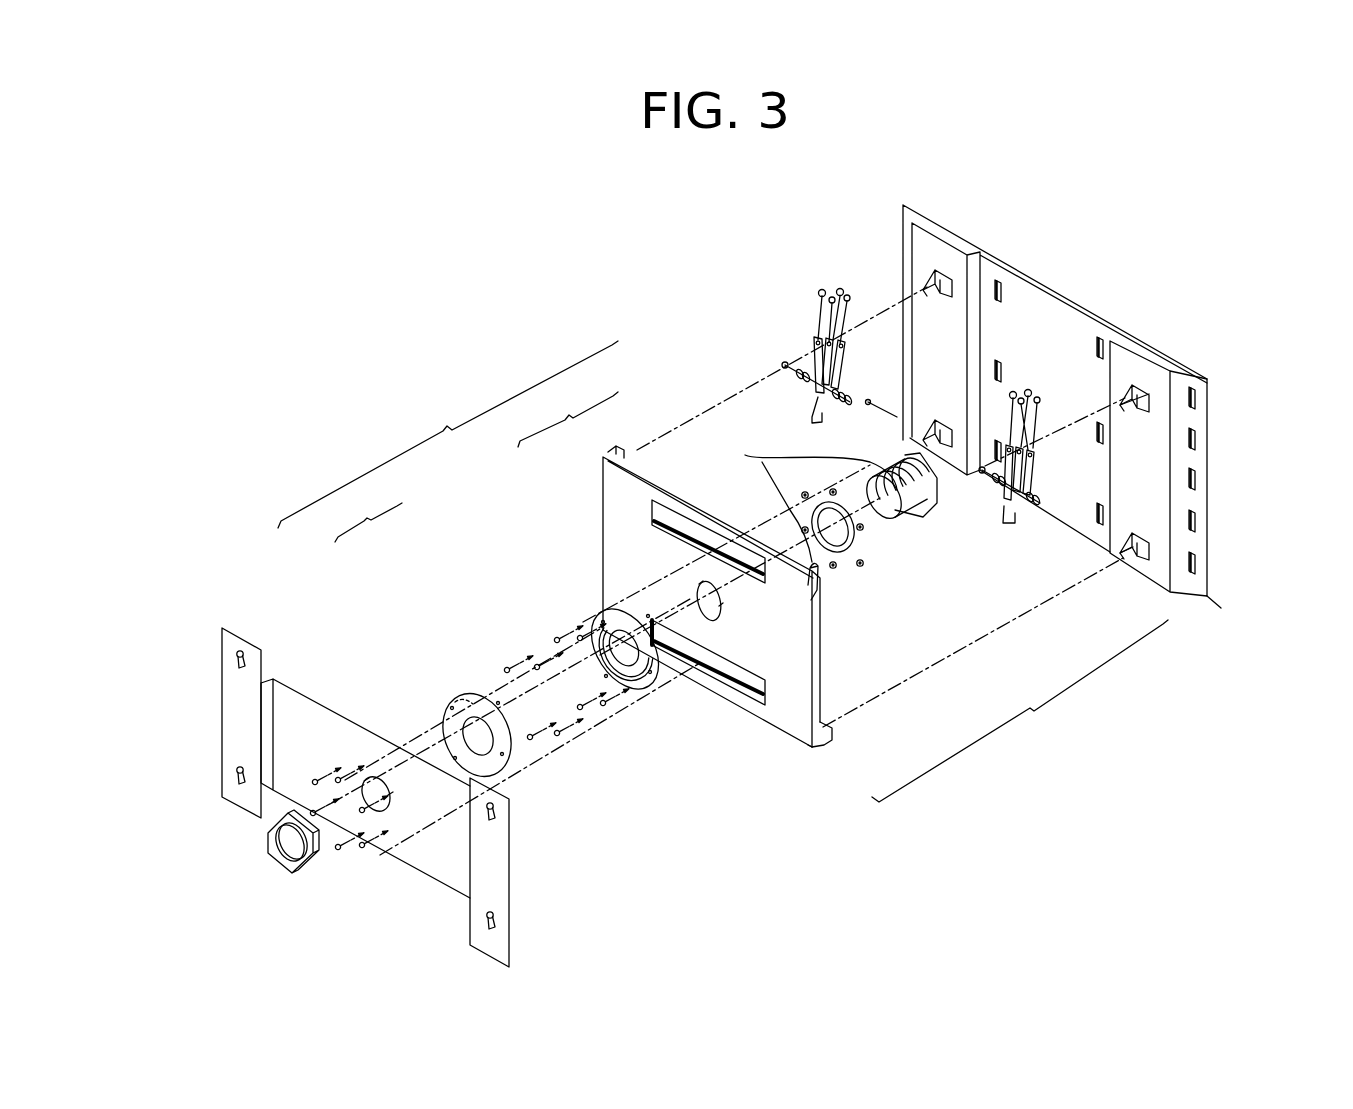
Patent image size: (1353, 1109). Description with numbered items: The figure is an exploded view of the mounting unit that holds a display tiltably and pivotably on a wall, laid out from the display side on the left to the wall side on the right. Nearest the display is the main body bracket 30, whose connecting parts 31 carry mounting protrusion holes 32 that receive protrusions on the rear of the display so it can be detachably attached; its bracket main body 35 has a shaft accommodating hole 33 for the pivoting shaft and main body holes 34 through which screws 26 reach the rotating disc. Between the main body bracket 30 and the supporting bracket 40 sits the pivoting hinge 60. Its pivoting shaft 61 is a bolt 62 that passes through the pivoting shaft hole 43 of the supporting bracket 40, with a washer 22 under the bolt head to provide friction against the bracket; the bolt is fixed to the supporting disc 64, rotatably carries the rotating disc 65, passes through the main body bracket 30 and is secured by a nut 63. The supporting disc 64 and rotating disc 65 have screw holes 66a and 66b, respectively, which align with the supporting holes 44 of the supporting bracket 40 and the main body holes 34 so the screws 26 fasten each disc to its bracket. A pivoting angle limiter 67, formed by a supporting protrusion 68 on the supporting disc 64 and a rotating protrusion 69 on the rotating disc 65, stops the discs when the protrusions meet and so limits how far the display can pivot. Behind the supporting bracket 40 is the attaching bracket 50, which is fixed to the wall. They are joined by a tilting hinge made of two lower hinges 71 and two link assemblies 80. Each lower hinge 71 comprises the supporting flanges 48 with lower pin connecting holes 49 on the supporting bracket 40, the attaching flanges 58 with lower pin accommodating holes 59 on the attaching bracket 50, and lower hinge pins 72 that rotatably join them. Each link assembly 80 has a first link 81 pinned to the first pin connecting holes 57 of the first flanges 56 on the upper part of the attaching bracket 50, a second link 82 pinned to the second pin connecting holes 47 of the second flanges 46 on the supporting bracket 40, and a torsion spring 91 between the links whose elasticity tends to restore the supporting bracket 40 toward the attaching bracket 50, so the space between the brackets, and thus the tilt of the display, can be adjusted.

The washer 22 is at (745, 447).
The screws 26 is at (566, 702).
The main body bracket 30 is at (513, 858).
The connecting parts 31 is at (230, 733).
The mounting protrusion holes 32 is at (233, 770).
The shaft accommodating hole 33 is at (358, 773).
The main body holes 34 is at (397, 822).
The bracket main body 35 is at (425, 872).
The supporting bracket 40 is at (762, 732).
The pivoting shaft hole 43 is at (705, 628).
The supporting holes 44 is at (709, 568).
The second flanges 46 is at (823, 577).
The second pin connecting holes 47 is at (826, 588).
The supporting flanges 48 is at (828, 733).
The lower pin connecting holes 49 is at (822, 733).
The attaching bracket 50 is at (1063, 292).
The first flanges 56 is at (1153, 405).
The first pin connecting holes 57 is at (1123, 408).
The attaching flanges 58 is at (1148, 563).
The lower pin accommodating holes 59 is at (1130, 557).
The pivoting hinge 60 is at (448, 434).
The pivoting shaft 61 is at (568, 419).
The bolt 62 is at (745, 455).
The nut 63 is at (288, 812).
The supporting disc 64 is at (600, 613).
The rotating disc 65 is at (440, 700).
The screw holes 66a is at (657, 683).
The screw holes 66b is at (498, 765).
The pivoting angle limiter 67 is at (368, 516).
The supporting protrusion 68 is at (593, 657).
The rotating protrusion 69 is at (465, 692).
The lower hinge 71 is at (1020, 711).
The lower hinge pins 72 is at (1221, 610).
The link assembly 80 is at (757, 262).
The first link 81 is at (843, 340).
The second link 82 is at (813, 342).
The torsion spring 91 is at (812, 423).